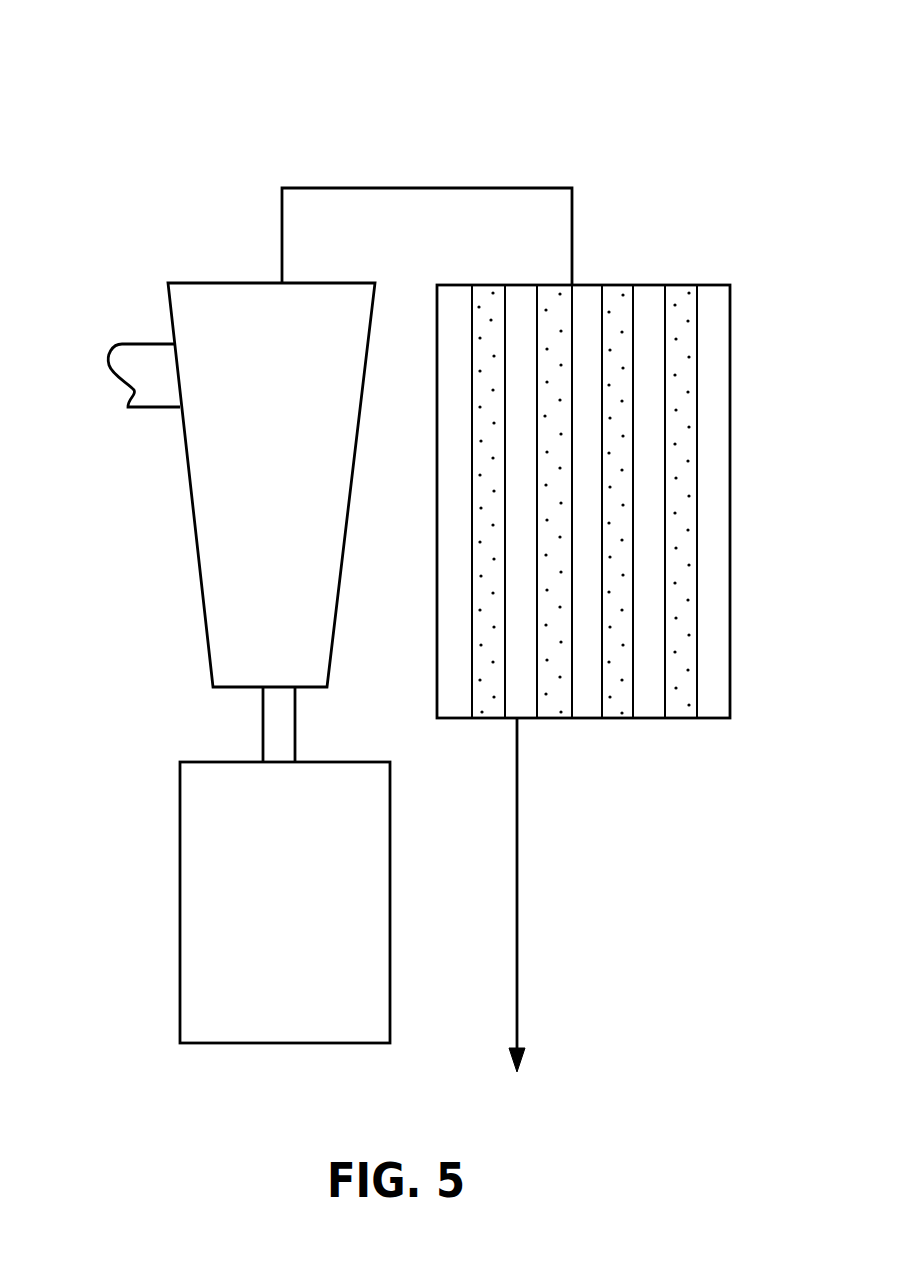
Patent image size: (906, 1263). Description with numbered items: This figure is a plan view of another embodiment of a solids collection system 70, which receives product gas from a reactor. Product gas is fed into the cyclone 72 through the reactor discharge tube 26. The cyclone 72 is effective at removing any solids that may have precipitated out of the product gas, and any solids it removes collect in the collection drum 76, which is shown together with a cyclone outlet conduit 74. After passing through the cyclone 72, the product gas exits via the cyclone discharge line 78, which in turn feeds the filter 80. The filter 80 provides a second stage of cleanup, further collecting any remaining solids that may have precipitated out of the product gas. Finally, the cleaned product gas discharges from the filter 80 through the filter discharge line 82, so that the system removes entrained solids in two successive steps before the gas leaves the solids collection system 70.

The solids collection system 70 is at (124, 66).
The cyclone 72 is at (199, 565).
The reactor discharge tube 26 is at (140, 410).
The cyclone discharge line 78 is at (282, 212).
The cyclone outlet conduit 74 is at (263, 719).
The collection drum 76 is at (180, 912).
The filter 80 is at (730, 420).
The filter discharge line 82 is at (517, 890).